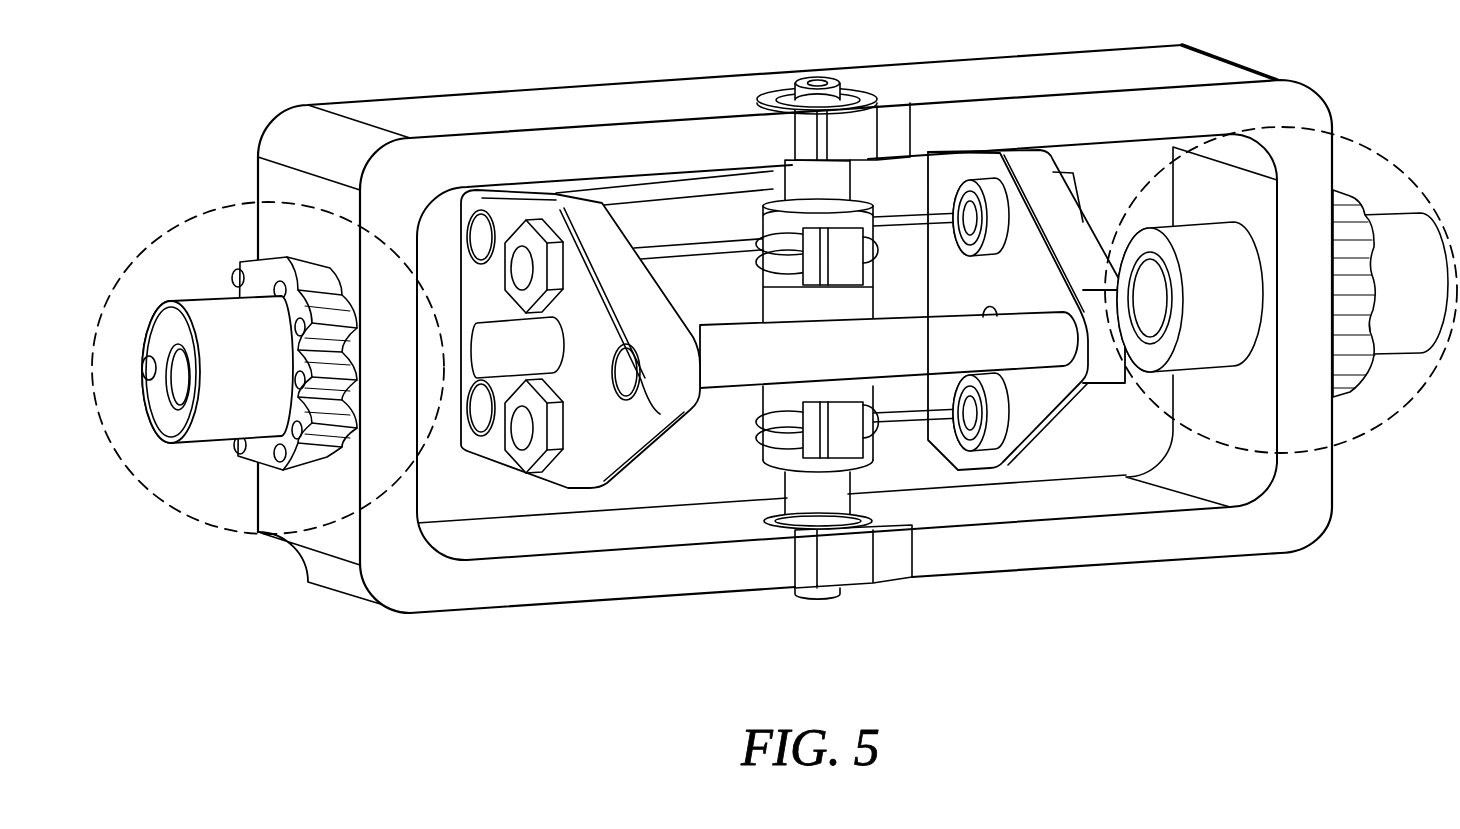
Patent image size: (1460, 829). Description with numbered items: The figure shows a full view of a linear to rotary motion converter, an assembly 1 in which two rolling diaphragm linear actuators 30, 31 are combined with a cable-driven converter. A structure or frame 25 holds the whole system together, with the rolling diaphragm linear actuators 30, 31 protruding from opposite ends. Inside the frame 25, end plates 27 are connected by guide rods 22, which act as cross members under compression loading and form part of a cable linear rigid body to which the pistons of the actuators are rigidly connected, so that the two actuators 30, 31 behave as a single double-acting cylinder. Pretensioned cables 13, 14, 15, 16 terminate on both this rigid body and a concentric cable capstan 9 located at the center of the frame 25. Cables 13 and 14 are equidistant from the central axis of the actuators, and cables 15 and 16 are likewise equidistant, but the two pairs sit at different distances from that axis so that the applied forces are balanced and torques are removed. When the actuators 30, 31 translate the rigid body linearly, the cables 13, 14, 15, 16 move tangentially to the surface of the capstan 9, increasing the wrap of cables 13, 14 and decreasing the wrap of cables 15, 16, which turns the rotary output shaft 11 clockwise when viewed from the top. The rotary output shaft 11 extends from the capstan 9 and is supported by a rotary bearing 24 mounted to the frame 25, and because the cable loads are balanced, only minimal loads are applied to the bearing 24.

The actuator assembly 1 is at (234, 116).
The concentric cable capstan 9 is at (780, 223).
The rotary output shaft 11 is at (818, 77).
The cable 13 is at (712, 395).
The cable 14 is at (680, 250).
The cable 15 is at (933, 222).
The cable 16 is at (975, 432).
The guide rods 22 is at (887, 197).
The rotary bearing 24 is at (770, 88).
The frame 25 is at (437, 575).
The end plates 27 is at (593, 370).
The rolling diaphragm linear actuator 30 is at (192, 200).
The rolling diaphragm linear actuator 31 is at (1382, 138).